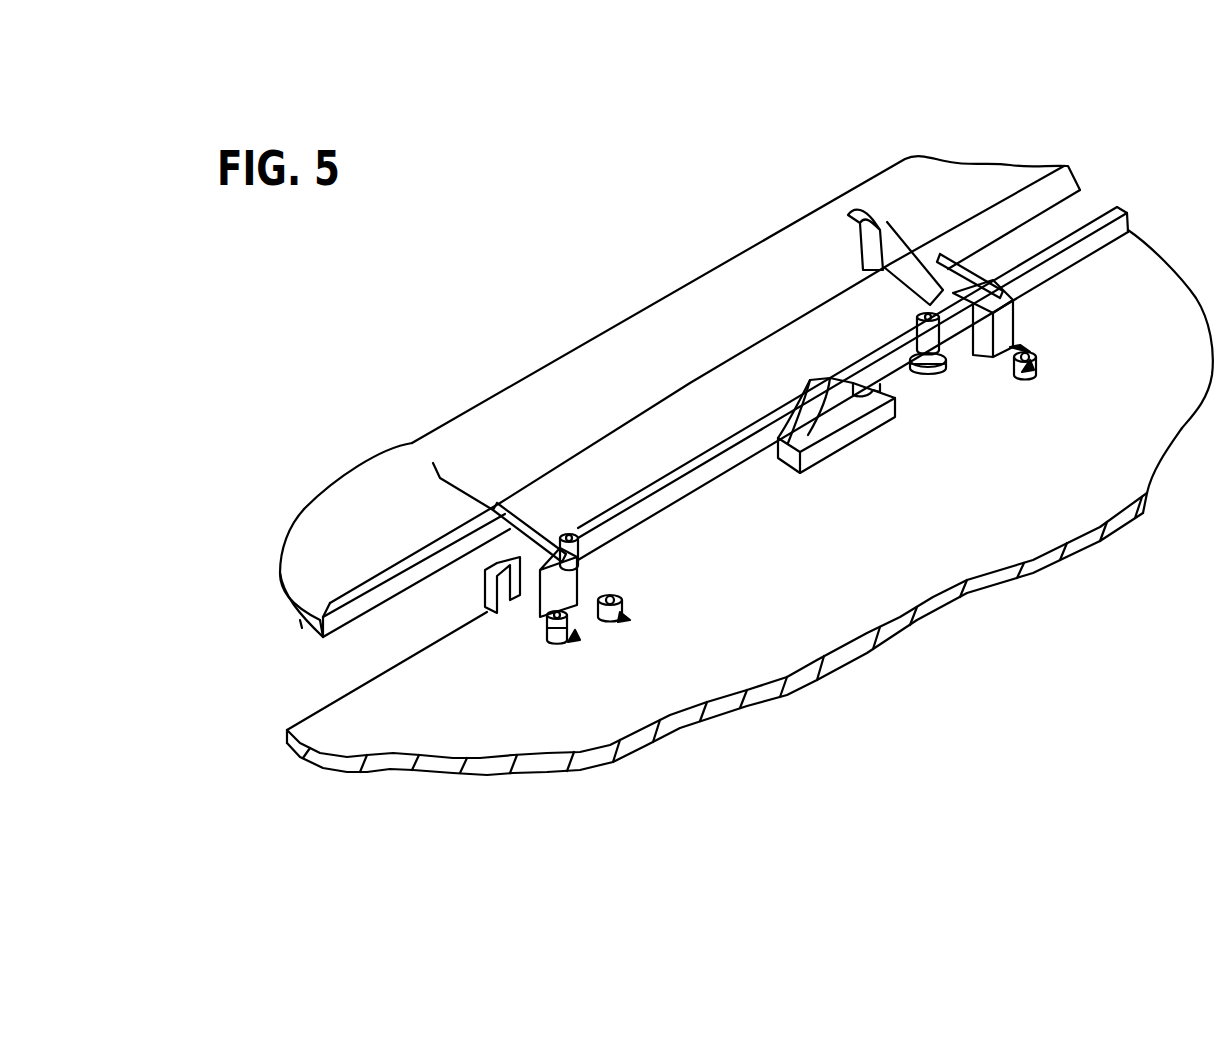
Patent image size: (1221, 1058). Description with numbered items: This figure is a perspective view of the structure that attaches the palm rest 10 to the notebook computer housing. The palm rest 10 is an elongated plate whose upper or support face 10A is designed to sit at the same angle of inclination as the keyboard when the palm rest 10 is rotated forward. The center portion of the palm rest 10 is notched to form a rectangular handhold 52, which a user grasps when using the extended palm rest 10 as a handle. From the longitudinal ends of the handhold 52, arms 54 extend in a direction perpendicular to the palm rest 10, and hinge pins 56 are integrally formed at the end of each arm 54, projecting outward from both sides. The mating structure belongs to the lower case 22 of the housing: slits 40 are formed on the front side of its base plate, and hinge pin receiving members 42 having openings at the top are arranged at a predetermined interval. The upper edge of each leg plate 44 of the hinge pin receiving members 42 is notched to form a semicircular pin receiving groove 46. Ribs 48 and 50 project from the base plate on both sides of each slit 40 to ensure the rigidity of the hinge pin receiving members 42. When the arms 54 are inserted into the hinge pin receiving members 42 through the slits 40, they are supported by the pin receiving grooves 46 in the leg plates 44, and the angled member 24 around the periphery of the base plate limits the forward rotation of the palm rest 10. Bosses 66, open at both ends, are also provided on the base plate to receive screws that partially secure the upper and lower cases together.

The palm rest 10 is at (745, 240).
The support face 10A is at (387, 490).
The lower case 22 is at (373, 715).
The angled member 24 is at (665, 468).
The handhold 52 is at (740, 342).
The slit 40 is at (520, 548).
The hinge pin receiving member 42 is at (583, 617).
The leg plate 44 is at (540, 593).
The pin receiving groove 46 is at (545, 620).
The rib 48 is at (487, 583).
The rib 50 is at (553, 545).
The arm 54 is at (475, 490).
The hinge pin 56 is at (515, 592).
The boss 66 is at (570, 530).